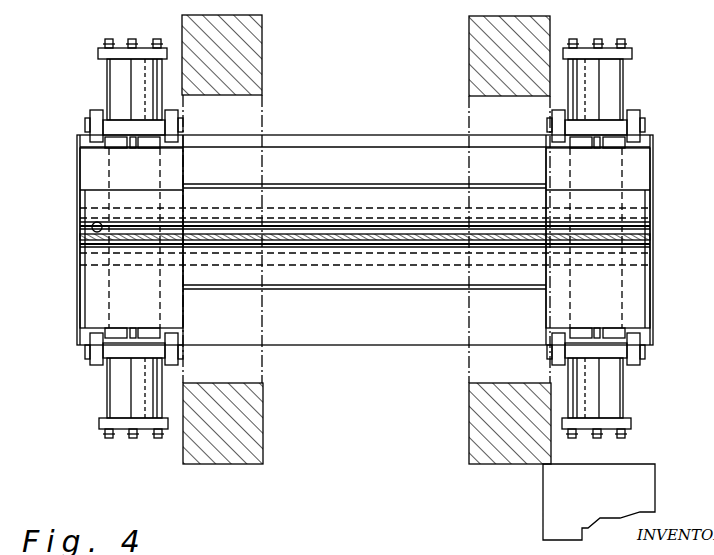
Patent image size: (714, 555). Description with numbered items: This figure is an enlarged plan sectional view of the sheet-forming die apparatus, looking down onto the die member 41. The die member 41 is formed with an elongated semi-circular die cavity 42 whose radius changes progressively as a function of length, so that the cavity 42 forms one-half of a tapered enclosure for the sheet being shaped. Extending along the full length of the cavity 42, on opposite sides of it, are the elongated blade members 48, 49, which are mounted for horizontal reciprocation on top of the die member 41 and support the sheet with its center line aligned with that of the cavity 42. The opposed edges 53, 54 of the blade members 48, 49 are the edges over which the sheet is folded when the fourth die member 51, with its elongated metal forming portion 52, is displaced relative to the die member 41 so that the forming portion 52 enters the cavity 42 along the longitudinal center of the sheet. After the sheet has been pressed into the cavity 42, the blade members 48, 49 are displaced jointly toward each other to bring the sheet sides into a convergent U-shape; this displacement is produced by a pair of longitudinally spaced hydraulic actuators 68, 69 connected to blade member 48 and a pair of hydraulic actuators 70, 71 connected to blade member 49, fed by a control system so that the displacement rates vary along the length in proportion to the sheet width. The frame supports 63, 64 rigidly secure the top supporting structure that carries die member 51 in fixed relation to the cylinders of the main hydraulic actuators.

The die member 41 is at (76, 259).
The die cavity 42 is at (642, 227).
The blade member 48 is at (229, 283).
The blade member 49 is at (229, 206).
The fourth die member 51 is at (567, 233).
The metal forming portion 52 is at (623, 230).
The edge of blade member 53 is at (632, 253).
The edge of blade member 54 is at (101, 222).
The frame support 63 is at (257, 46).
The frame support 64 is at (472, 43).
The hydraulic actuator 68 is at (118, 70).
The hydraulic actuator 69 is at (617, 88).
The hydraulic actuator 70 is at (116, 398).
The hydraulic actuator 71 is at (613, 400).